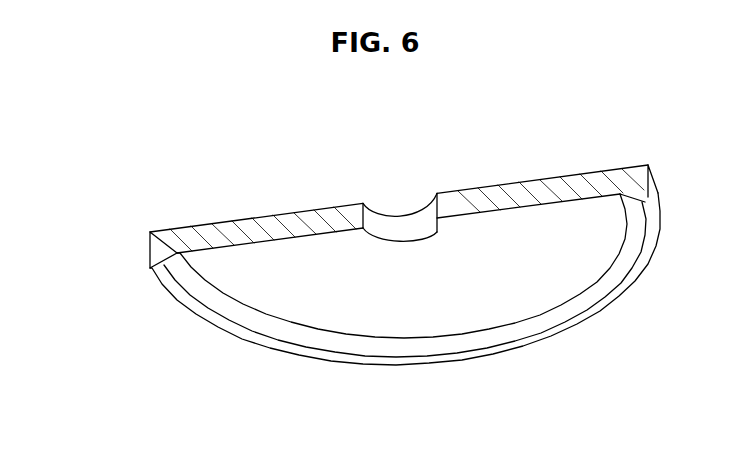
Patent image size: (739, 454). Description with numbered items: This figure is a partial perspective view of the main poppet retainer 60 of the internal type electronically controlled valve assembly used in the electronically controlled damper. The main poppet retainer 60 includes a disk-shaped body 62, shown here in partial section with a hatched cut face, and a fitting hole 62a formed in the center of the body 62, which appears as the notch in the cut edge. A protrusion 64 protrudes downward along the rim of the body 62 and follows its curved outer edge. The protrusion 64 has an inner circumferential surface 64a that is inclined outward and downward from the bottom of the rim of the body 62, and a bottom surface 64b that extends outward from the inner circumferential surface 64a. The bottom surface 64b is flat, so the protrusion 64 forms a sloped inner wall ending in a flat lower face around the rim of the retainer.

The main poppet retainer 60 is at (156, 213).
The disk-shaped body 62 is at (303, 210).
The fitting hole 62a is at (409, 227).
The protrusion 64 is at (166, 262).
The inner circumferential surface 64a is at (243, 316).
The bottom surface 64b is at (183, 300).